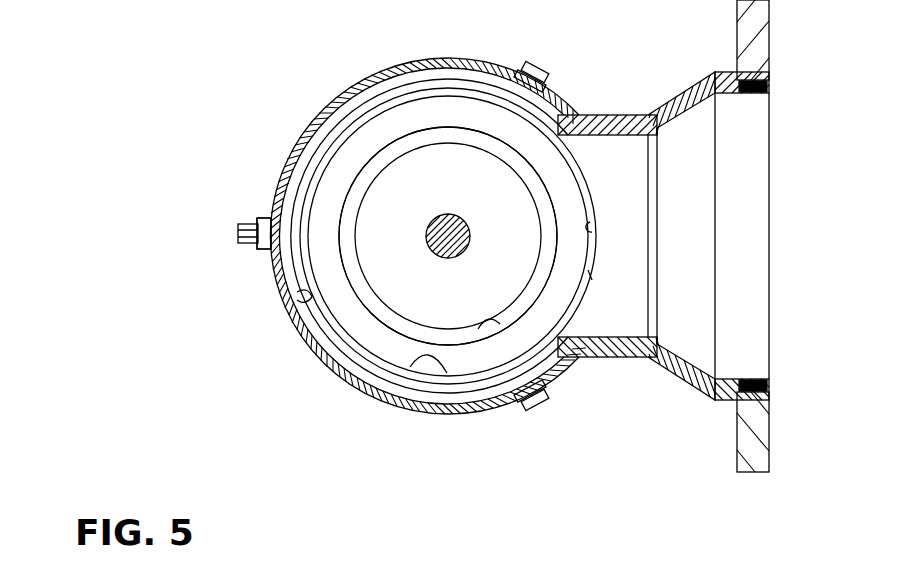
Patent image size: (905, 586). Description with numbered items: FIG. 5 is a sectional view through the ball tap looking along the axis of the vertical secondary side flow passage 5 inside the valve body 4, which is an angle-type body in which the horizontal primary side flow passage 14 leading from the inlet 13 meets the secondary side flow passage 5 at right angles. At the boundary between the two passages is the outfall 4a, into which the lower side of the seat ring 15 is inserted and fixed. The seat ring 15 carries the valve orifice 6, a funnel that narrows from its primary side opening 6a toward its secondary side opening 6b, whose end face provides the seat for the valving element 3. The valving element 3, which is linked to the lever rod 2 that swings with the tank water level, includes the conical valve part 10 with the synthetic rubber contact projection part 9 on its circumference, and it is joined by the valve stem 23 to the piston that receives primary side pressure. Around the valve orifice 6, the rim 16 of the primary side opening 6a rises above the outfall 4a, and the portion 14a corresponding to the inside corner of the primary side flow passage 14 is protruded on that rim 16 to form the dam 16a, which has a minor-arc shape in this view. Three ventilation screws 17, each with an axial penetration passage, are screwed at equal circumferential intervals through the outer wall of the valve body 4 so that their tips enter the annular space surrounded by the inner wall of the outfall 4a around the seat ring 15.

The lever rod 2 is at (252, 224).
The valving element 3 is at (418, 153).
The valve body 4 is at (340, 93).
The outfall 4a is at (590, 228).
The secondary side flow passage 5 is at (305, 297).
The valve orifice 6 is at (365, 327).
The primary side opening 6a is at (412, 372).
The secondary side opening 6b is at (481, 324).
The contact projection part 9 is at (347, 258).
The valve part 10 is at (385, 183).
The inlet 13 is at (757, 183).
The primary side flow passage 14 is at (640, 98).
The inside corner portion 14a is at (638, 258).
The seat ring 15 is at (459, 92).
The rim 16 is at (572, 163).
The dam 16a is at (590, 275).
The ventilation screws 17 is at (535, 63).
The valve stem 23 is at (431, 249).